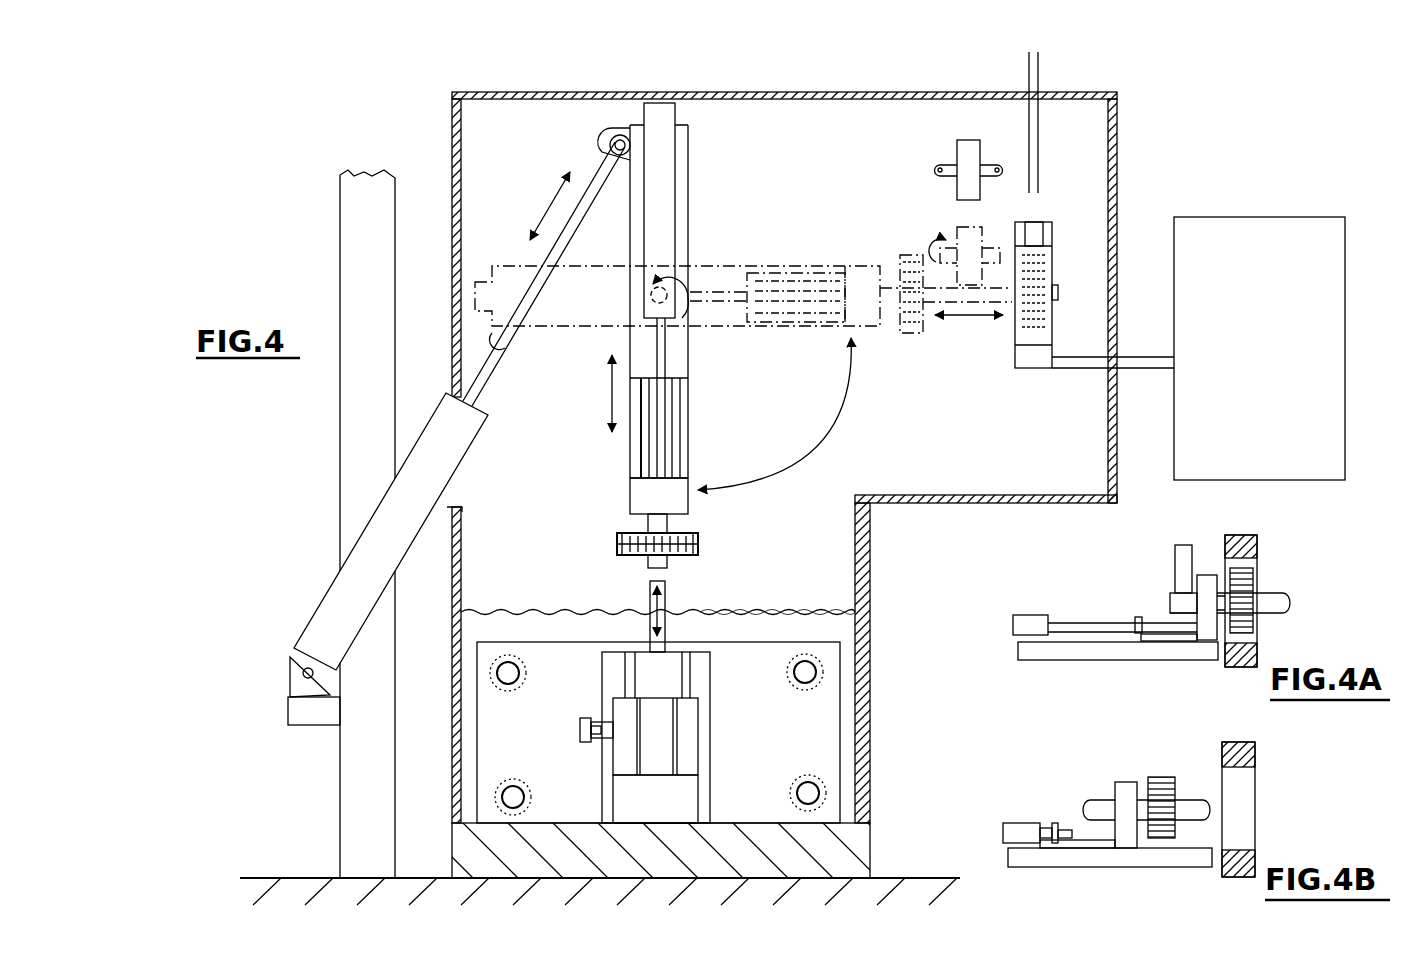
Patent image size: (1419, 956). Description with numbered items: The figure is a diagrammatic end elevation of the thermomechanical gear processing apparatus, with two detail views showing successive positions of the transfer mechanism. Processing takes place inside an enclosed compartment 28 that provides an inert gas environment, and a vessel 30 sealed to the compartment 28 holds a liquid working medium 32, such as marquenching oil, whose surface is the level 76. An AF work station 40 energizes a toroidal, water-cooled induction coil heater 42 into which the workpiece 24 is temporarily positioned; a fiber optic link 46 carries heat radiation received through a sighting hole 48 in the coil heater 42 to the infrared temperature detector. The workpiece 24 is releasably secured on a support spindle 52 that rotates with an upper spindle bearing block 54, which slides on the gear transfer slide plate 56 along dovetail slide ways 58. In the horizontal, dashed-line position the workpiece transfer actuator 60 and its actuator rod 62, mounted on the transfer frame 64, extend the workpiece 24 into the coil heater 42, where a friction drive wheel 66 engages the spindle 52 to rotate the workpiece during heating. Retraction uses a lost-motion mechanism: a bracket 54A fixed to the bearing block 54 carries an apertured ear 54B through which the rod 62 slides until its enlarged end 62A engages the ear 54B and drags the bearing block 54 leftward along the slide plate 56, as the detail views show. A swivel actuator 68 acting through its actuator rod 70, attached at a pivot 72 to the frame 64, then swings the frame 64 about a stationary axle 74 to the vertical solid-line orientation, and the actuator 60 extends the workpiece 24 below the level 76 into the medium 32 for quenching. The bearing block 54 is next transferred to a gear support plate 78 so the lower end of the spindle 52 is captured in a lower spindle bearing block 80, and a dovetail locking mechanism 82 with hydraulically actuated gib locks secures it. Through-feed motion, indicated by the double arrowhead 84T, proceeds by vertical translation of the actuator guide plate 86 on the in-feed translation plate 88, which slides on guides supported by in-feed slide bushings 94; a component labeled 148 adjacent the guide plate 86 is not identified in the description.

In FIG. 4, the enclosed compartment 28 is at (448, 130).
In FIG. 4, the vessel 30 is at (873, 760).
In FIG. 4, the liquid working medium 32 is at (830, 629).
In FIG. 4, the AF work station 40 is at (1318, 273).
In FIG. 4, the induction coil heater 42 is at (1033, 358).
In FIG. 4A, the induction coil heater 42 is at (1245, 546).
In FIG. 4B, the induction coil heater 42 is at (1240, 752).
In FIG. 4, the fiber optic link 46 is at (1036, 78).
In FIG. 4, the sighting hole 48 is at (1036, 228).
In FIG. 4, the support spindle 52 is at (665, 525).
In FIG. 4A, the support spindle 52 is at (1275, 603).
In FIG. 4B, the support spindle 52 is at (1097, 808).
In FIG. 4, the upper spindle bearing block 54 is at (645, 495).
In FIG. 4A, the upper spindle bearing block 54 is at (1207, 584).
In FIG. 4B, the upper spindle bearing block 54 is at (1125, 840).
In FIG. 4A, the longitudinally extending bracket 54A is at (1170, 642).
In FIG. 4A, the apertured transverse ear 54B is at (1135, 640).
In FIG. 4B, the apertured transverse ear 54B is at (1050, 847).
In FIG. 4, the gear transfer slide plate 56 is at (683, 428).
In FIG. 4, the dovetail slide ways 58 is at (640, 450).
In FIG. 4, the workpiece transfer actuator 60 is at (657, 188).
In FIG. 4A, the workpiece transfer actuator 60 is at (1030, 619).
In FIG. 4B, the workpiece transfer actuator 60 is at (1022, 829).
In FIG. 4, the actuator rod 62 is at (667, 357).
In FIG. 4A, the actuator rod 62 is at (1090, 623).
In FIG. 4A, the enlarged end 62A is at (1192, 626).
In FIG. 4B, the enlarged end 62A is at (1056, 826).
In FIG. 4, the transfer frame 64 is at (682, 225).
In FIG. 4A, the transfer frame 64 is at (1060, 652).
In FIG. 4B, the transfer frame 64 is at (1085, 858).
In FIG. 4, the friction drive wheel 66 is at (965, 157).
In FIG. 4A, the friction drive wheel 66 is at (1183, 556).
In FIG. 4, the swivel actuator 68 is at (404, 552).
In FIG. 4, the actuator rod 70 is at (494, 364).
In FIG. 4, the pivotal attachment 72 is at (608, 137).
In FIG. 4, the stationary axle 74 is at (650, 292).
In FIG. 4, the level of the liquid working medium 76 is at (560, 604).
In FIG. 4, the gear support plate 78 is at (690, 735).
In FIG. 4, the lower spindle bearing block 80 is at (676, 793).
In FIG. 4, the dovetail locking mechanism 82 is at (576, 736).
In FIG. 4, the double arrowhead 84T is at (671, 613).
In FIG. 4, the actuator guide plate 86 is at (700, 681).
In FIG. 4, the in-feed translation plate 88 is at (815, 722).
In FIG. 4, the in-feed slide bushings 94 is at (527, 673).
In FIG. 4, the piston rod guide 148 is at (690, 672).
In FIG. 4, the workpiece 24 is at (690, 545).
In FIG. 4A, the workpiece 24 is at (1245, 586).
In FIG. 4B, the workpiece 24 is at (1160, 790).